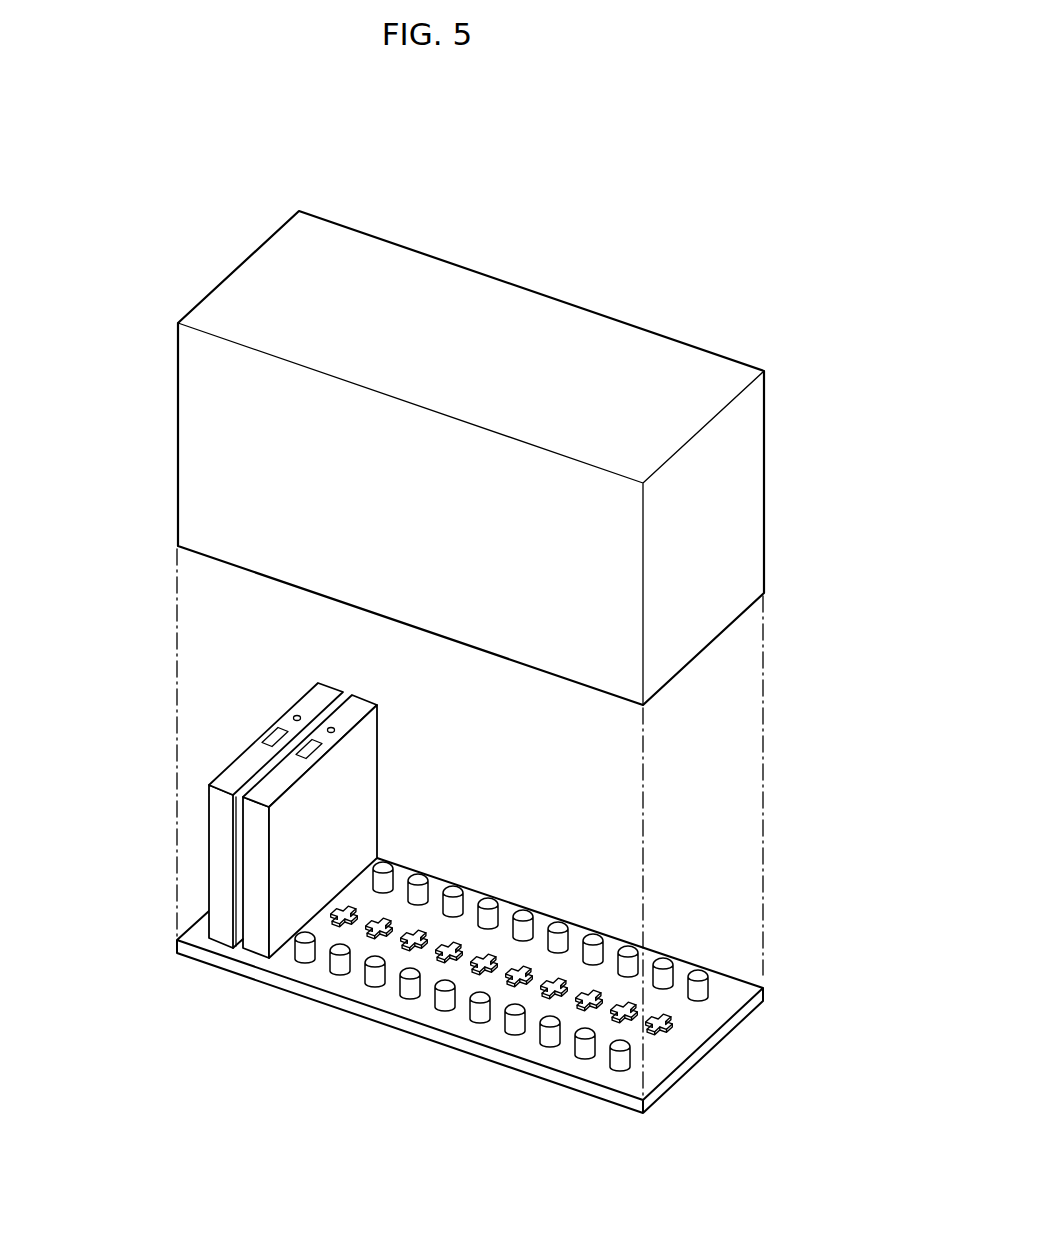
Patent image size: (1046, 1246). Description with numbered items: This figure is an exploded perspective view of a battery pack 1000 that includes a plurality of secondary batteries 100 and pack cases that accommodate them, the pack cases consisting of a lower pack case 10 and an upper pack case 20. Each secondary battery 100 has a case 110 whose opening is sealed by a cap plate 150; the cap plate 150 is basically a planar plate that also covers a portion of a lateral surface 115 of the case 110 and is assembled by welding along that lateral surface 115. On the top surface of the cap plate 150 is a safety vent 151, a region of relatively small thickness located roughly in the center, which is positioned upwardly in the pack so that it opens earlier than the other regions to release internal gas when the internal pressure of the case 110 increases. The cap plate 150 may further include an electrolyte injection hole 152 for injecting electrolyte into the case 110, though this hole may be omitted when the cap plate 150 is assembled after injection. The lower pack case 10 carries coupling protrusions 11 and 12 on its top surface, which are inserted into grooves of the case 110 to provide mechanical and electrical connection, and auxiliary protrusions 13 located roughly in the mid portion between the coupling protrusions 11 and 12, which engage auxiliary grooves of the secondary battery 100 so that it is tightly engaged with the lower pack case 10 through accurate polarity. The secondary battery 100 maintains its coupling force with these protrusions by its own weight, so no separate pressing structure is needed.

The battery pack 1000 is at (790, 221).
The upper pack case 20 is at (546, 260).
The lower pack case 10 is at (458, 1043).
The coupling protrusion 11 is at (408, 985).
The coupling protrusion 12 is at (521, 914).
The auxiliary protrusion 13 is at (414, 930).
The secondary battery 100 is at (230, 788).
The case 110 is at (213, 796).
The lateral surface 115 is at (222, 825).
The cap plate 150 is at (213, 796).
The safety vent 151 is at (272, 738).
The electrolyte injection hole 152 is at (293, 716).